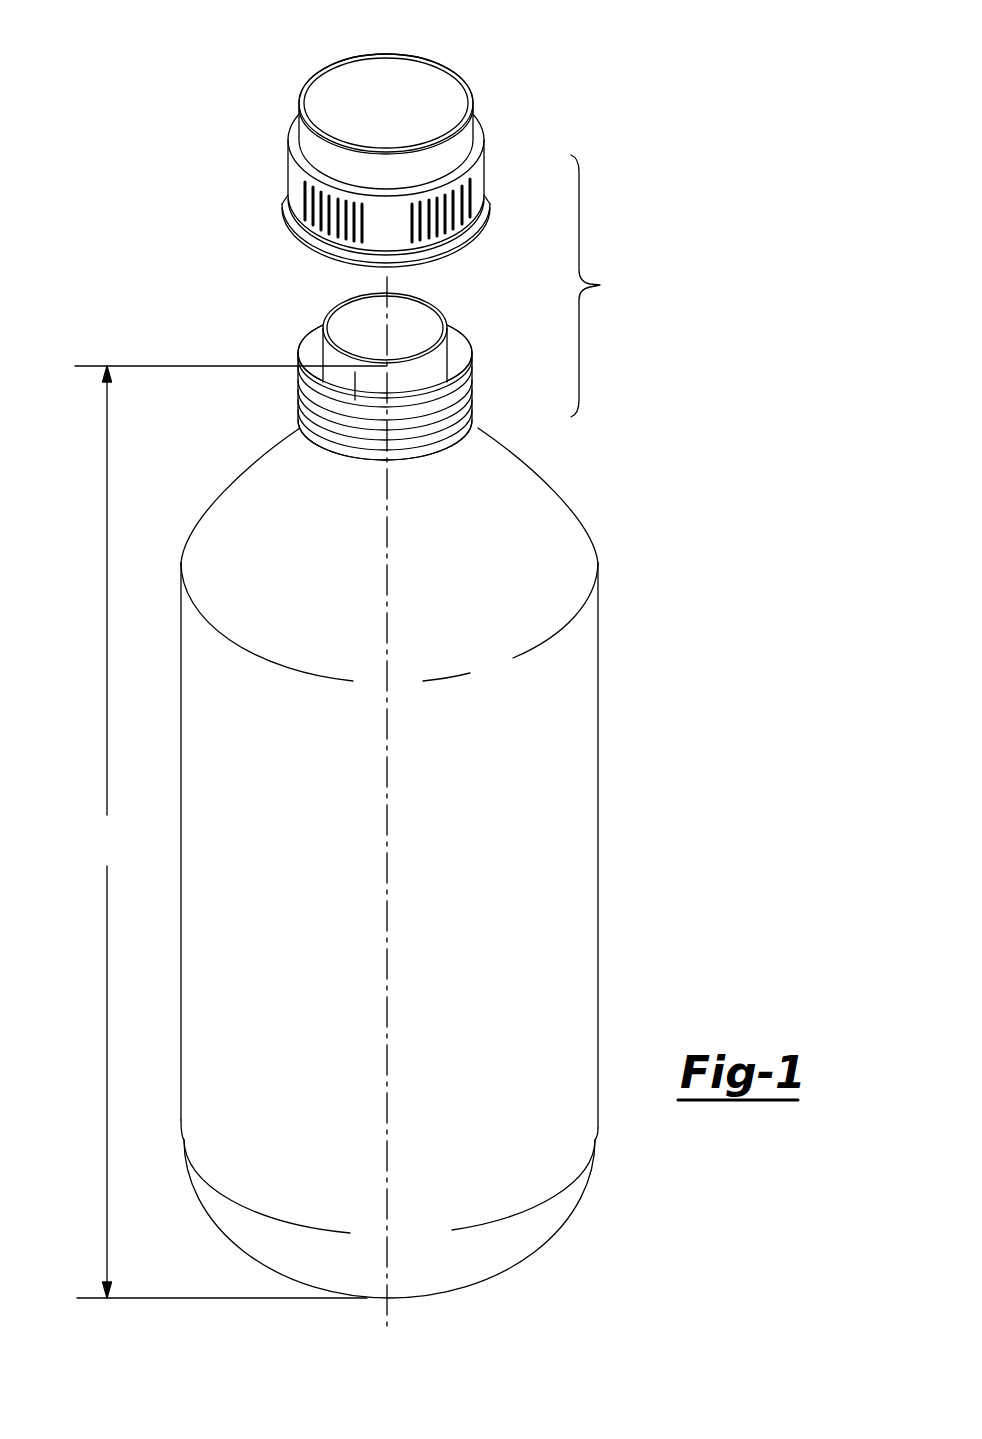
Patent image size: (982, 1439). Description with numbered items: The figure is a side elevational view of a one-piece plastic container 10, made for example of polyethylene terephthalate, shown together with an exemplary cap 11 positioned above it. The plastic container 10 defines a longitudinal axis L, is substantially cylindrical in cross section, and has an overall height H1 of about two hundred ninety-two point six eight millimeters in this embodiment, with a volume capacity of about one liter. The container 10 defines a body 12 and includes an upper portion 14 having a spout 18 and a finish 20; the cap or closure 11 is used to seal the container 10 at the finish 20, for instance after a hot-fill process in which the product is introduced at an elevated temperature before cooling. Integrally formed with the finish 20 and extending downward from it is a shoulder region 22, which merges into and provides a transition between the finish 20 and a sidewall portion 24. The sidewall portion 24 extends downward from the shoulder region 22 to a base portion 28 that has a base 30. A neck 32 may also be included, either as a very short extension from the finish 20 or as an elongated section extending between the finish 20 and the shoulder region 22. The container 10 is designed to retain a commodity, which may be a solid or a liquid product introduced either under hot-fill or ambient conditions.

The one-piece plastic container 10 is at (493, 675).
The cap 11 is at (337, 92).
The body 12 is at (487, 799).
The upper portion 14 is at (409, 163).
The spout 18 is at (333, 300).
The finish 20 is at (330, 355).
The shoulder region 22 is at (530, 456).
The sidewall portion 24 is at (600, 718).
The base portion 28 is at (538, 1278).
The base 30 is at (430, 1298).
The neck 32 is at (397, 457).
The longitudinal axis L is at (387, 935).
The overall height H1 is at (230, 832).